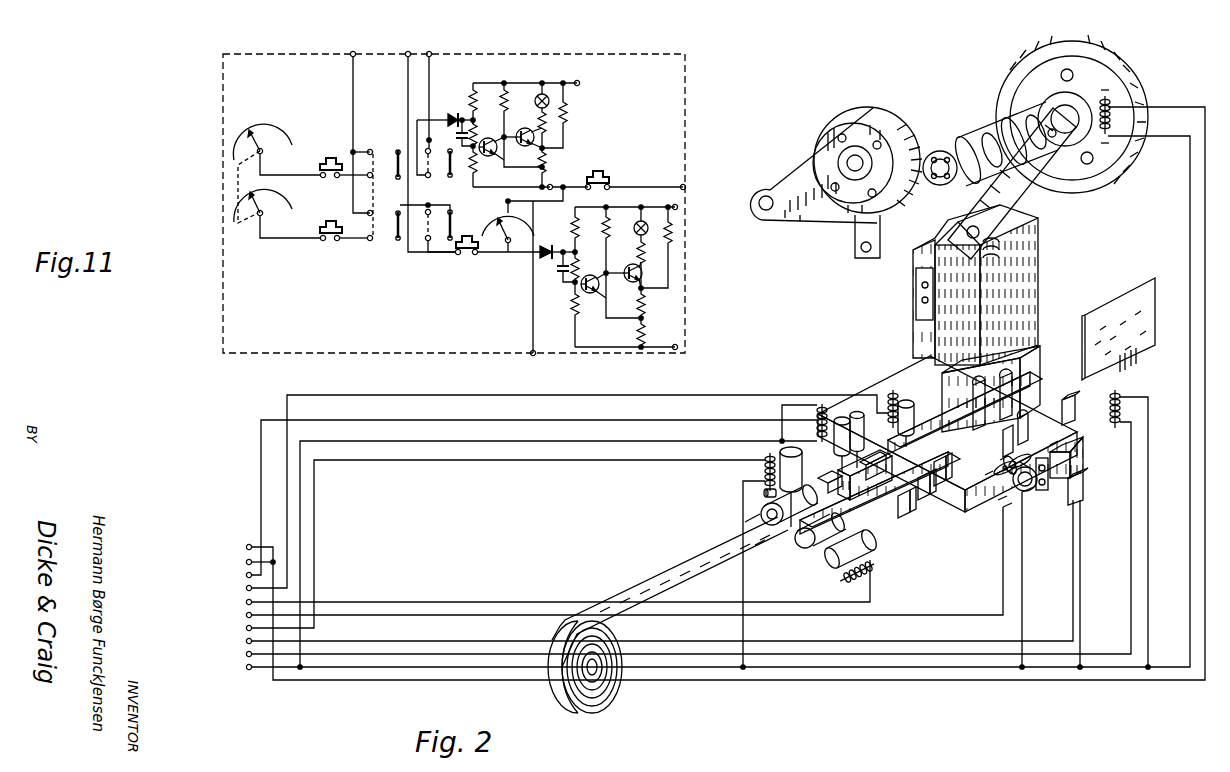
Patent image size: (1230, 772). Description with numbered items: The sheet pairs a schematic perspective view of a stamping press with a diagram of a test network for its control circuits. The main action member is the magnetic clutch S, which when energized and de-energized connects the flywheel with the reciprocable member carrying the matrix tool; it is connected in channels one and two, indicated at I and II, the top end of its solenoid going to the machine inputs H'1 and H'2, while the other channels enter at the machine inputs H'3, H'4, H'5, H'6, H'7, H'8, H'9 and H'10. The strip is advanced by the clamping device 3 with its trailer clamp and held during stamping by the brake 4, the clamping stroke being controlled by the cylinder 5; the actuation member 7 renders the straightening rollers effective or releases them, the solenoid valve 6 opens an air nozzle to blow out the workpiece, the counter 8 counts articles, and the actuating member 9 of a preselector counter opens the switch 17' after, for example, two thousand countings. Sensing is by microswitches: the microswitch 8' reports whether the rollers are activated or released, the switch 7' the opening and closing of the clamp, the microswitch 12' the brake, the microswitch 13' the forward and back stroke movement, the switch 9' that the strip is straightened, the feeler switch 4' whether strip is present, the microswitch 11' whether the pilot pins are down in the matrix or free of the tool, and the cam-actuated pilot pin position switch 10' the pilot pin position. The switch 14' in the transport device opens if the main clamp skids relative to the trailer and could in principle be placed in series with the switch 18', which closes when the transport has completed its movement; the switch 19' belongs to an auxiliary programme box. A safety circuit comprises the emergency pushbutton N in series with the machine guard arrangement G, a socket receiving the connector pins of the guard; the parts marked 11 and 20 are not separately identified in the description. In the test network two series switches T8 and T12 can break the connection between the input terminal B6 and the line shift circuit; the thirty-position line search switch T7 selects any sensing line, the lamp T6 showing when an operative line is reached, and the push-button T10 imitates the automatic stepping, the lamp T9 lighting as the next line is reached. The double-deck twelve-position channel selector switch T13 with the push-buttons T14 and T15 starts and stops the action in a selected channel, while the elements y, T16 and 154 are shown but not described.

In FIG. 11, the supply terminal y is at (427, 142).
In FIG. 11, the input terminal B6 is at (434, 90).
In FIG. 11, the channel selector switch T13 is at (276, 168).
In FIG. 11, the push-button T14 is at (333, 155).
In FIG. 11, the push-button T15 is at (330, 219).
In FIG. 11, the switch T12 is at (408, 186).
In FIG. 11, the switch T8 is at (436, 186).
In FIG. 11, the indicator lamp T9 is at (535, 103).
In FIG. 11, the push button switch T16 is at (617, 168).
In FIG. 11, the terminal 154 is at (696, 186).
In FIG. 11, the line search switch T7 is at (523, 270).
In FIG. 11, the push-button switch T10 is at (496, 237).
In FIG. 11, the indicator lamp T6 is at (635, 228).
In FIG. 2, the machine input H'1 is at (713, 393).
In FIG. 2, the machine input H'2 is at (247, 563).
In FIG. 2, the terminal H'3 is at (519, 503).
In FIG. 2, the terminal H'4 is at (555, 497).
In FIG. 2, the terminal H'5 is at (546, 586).
In FIG. 2, the terminal H'6 is at (612, 566).
In FIG. 2, the terminal H'7 is at (493, 549).
In FIG. 2, the terminal H'8 is at (647, 576).
In FIG. 2, the terminal H'9 is at (676, 543).
In FIG. 2, the terminal H'10 is at (705, 407).
In FIG. 2, the microswitch 13' is at (708, 597).
In FIG. 2, the cylinder 5 is at (830, 560).
In FIG. 2, the magnetic clutch S is at (1110, 118).
In FIG. 2, the switch contact I is at (1102, 91).
In FIG. 2, the switch contact II is at (1101, 150).
In FIG. 2, the pilot pin position switch 10' is at (891, 493).
In FIG. 2, the clamping device 3 is at (858, 412).
In FIG. 2, the switch 18' is at (878, 401).
In FIG. 2, the brake 4 is at (913, 414).
In FIG. 2, the actuation member 7 is at (790, 487).
In FIG. 2, the switch 14' is at (865, 465).
In FIG. 2, the feeler switch 4' is at (824, 482).
In FIG. 2, the microswitch 8' is at (748, 492).
In FIG. 2, the switch 7' is at (911, 511).
In FIG. 2, the microswitch 12' is at (933, 492).
In FIG. 2, the sensing switch 9' is at (943, 474).
In FIG. 2, the microswitch 11' is at (1035, 427).
In FIG. 2, the guide tab 11 is at (1030, 441).
In FIG. 2, the roller 20 is at (1018, 456).
In FIG. 2, the switch 17' is at (1083, 408).
In FIG. 2, the actuating member 9 is at (1125, 409).
In FIG. 2, the switch 19' is at (1085, 457).
In FIG. 2, the emergency pushbutton N is at (1039, 476).
In FIG. 2, the solenoid valve 6 is at (1030, 490).
In FIG. 2, the counter 8 is at (1086, 486).
In FIG. 2, the machine guard arrangement G is at (1120, 300).